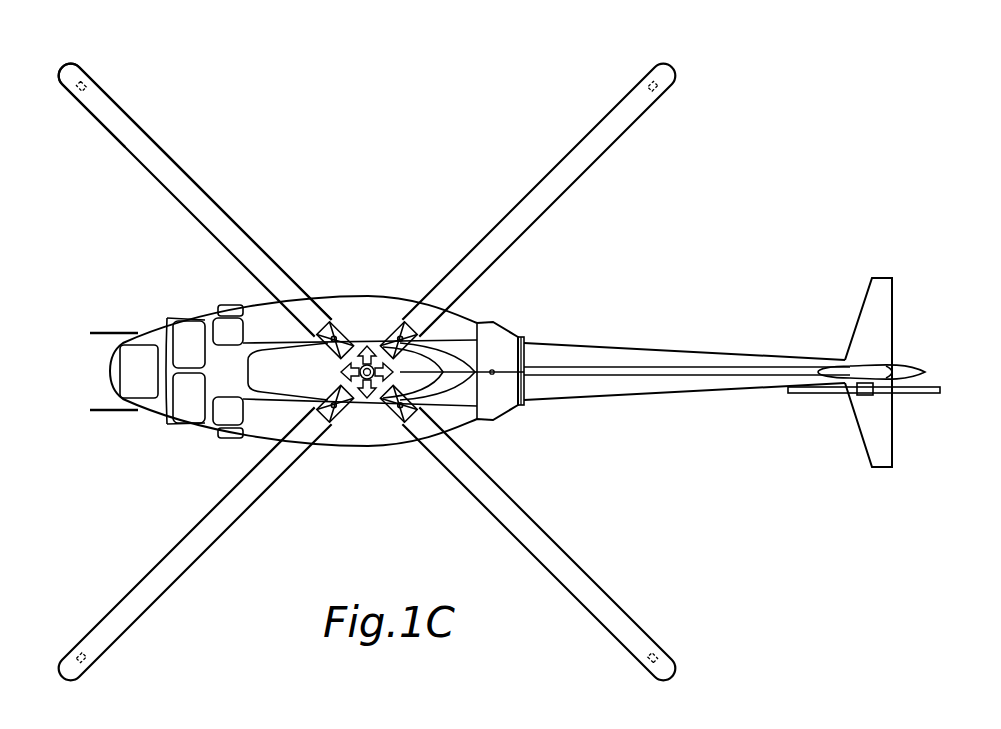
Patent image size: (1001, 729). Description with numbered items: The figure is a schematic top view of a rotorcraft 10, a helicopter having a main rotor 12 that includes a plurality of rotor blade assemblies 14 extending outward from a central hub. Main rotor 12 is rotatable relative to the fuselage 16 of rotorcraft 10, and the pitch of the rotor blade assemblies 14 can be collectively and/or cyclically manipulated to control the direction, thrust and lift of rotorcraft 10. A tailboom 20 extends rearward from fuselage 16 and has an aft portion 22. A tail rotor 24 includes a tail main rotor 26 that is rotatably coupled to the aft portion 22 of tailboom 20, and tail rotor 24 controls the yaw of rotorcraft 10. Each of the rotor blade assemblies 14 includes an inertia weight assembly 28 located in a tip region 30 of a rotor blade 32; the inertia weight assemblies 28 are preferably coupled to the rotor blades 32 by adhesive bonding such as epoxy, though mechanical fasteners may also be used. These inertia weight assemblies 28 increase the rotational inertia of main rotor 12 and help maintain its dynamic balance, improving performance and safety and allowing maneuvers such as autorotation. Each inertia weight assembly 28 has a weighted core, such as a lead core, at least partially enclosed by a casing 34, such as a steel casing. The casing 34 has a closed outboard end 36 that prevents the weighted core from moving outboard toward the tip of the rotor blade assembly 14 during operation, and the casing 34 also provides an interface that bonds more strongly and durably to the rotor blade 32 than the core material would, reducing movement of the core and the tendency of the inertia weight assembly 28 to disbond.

The rotorcraft 10 is at (138, 303).
The main rotor 12 is at (357, 335).
The rotor blade assemblies 14 is at (246, 228).
The fuselage 16 is at (363, 445).
The tailboom 20 is at (656, 351).
The aft portion 22 is at (885, 468).
The tail rotor 24 is at (836, 410).
The tail main rotor 26 is at (864, 396).
The inertia weight assembly 28 is at (80, 96).
The tip region 30 is at (91, 75).
The rotor blade 32 is at (179, 162).
The casing 34 is at (66, 90).
The closed outboard end 36 is at (60, 65).